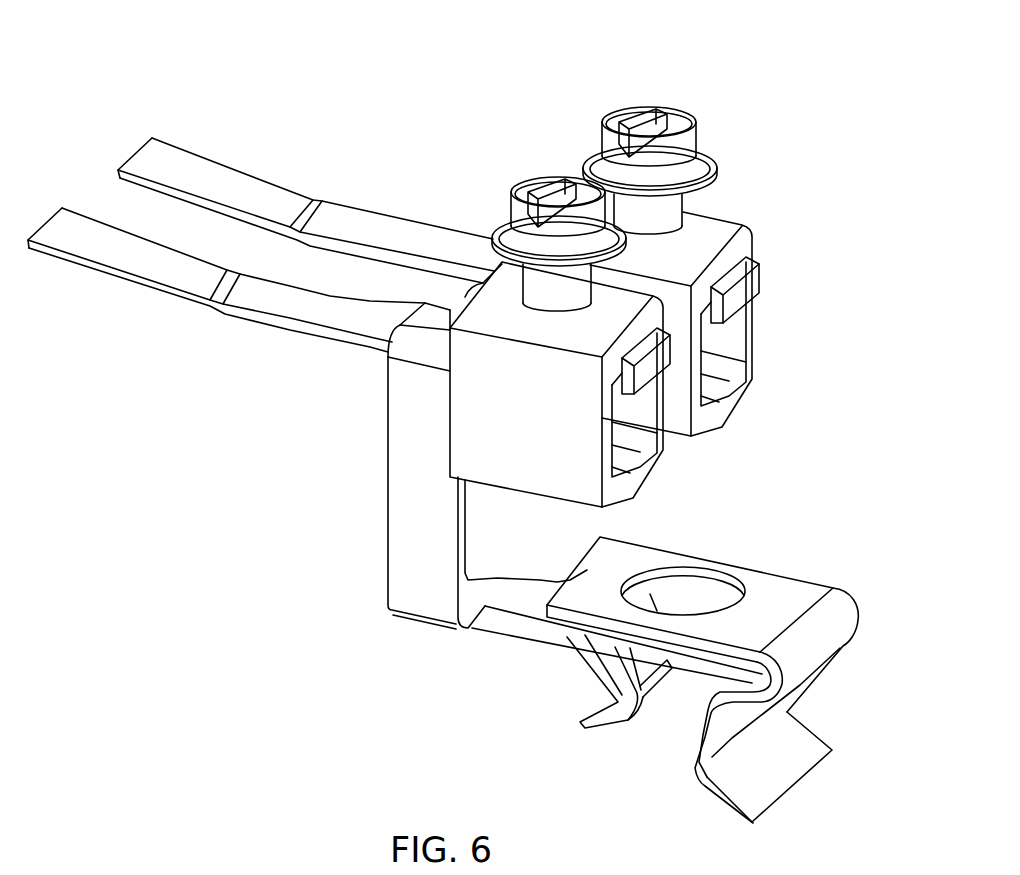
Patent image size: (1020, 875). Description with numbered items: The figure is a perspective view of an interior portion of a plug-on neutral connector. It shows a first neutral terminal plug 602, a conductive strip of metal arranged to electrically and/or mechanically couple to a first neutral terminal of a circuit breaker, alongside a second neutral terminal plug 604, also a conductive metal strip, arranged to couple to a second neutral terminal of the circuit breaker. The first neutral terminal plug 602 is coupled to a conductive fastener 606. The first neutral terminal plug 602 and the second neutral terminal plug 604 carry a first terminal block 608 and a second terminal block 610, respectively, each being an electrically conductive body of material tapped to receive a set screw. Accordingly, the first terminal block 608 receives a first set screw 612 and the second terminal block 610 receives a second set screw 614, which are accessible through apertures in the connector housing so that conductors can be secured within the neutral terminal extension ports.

The first neutral terminal plug 602 is at (77, 220).
The second neutral terminal plug 604 is at (215, 172).
The conductive fastener 606 is at (834, 581).
The first terminal block 608 is at (471, 424).
The second terminal block 610 is at (745, 240).
The first set screw 612 is at (535, 184).
The second set screw 614 is at (628, 110).